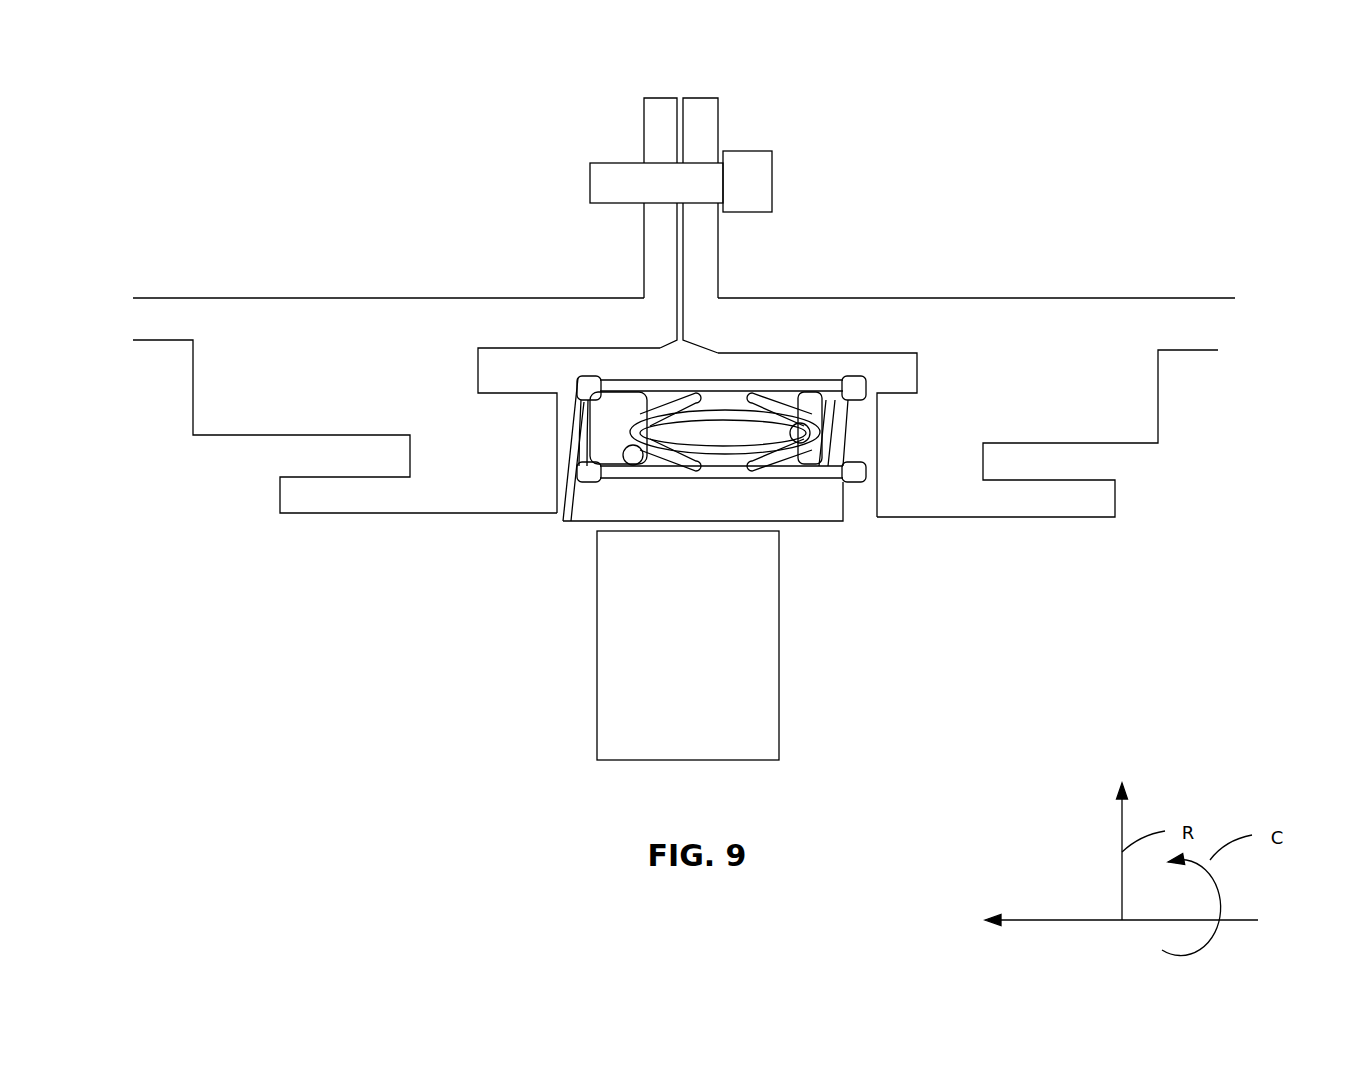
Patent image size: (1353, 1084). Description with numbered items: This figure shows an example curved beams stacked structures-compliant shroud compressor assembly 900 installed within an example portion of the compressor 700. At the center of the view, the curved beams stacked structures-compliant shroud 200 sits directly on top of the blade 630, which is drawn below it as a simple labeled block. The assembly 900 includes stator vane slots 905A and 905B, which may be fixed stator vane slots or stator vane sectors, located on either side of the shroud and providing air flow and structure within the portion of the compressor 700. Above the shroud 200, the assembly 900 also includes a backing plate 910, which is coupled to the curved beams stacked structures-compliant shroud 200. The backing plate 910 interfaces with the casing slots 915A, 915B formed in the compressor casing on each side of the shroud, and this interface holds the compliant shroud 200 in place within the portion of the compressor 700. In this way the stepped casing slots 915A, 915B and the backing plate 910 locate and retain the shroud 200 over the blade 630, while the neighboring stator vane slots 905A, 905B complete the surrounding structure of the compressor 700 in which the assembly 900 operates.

The curved beams stacked structures-compliant shroud compressor assembly 900 is at (924, 90).
The compressor 700 is at (1082, 248).
The backing plate 910 is at (682, 360).
The casing slot 915A is at (510, 371).
The casing slot 915B is at (907, 366).
The stator vane slot 905A is at (300, 457).
The stator vane slot 905B is at (1125, 469).
The curved beams stacked structures-compliant shroud 200 is at (827, 364).
The blade 630 is at (779, 681).